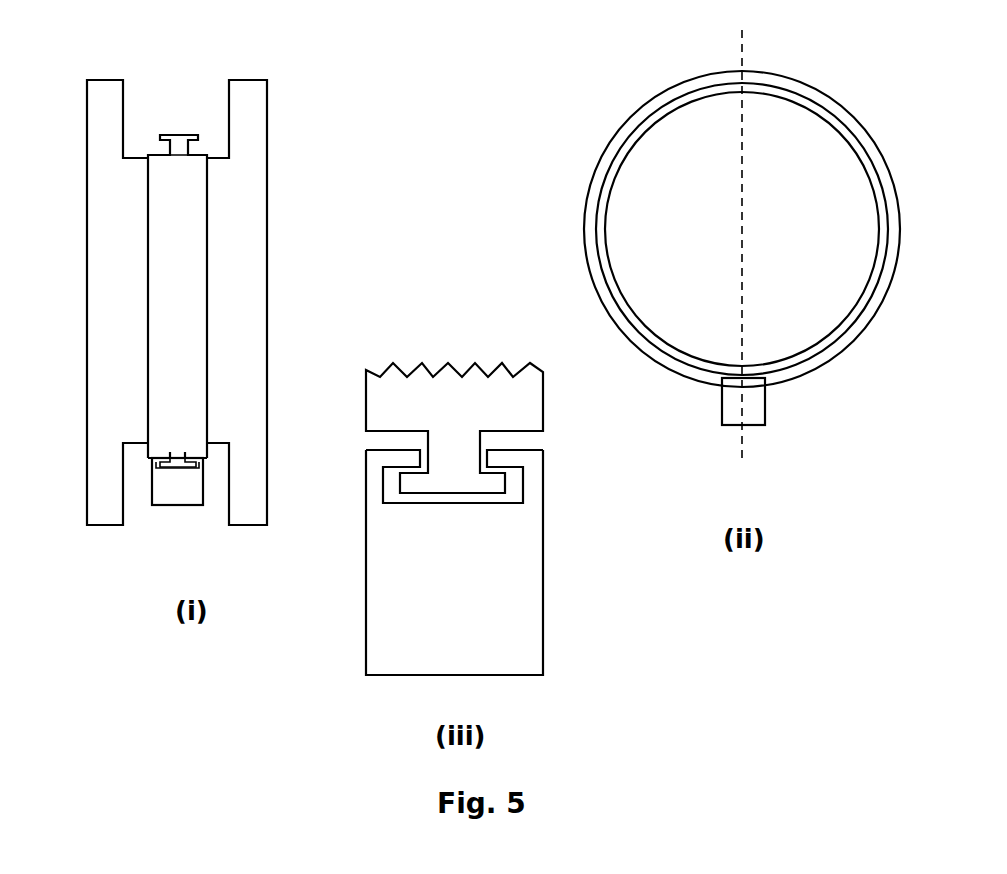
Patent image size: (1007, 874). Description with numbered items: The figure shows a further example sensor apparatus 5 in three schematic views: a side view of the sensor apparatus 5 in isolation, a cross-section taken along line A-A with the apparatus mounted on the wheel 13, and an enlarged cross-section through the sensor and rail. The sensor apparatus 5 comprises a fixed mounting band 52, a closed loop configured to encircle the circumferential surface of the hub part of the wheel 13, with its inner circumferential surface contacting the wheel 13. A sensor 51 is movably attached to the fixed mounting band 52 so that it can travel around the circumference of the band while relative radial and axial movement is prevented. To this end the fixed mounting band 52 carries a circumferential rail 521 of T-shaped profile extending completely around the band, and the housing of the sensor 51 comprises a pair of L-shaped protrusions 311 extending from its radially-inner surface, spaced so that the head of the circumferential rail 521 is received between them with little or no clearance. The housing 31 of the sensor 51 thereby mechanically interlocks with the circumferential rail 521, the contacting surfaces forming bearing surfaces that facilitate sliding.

The sensor apparatus 5 is at (246, 224).
The wheel 13 is at (102, 355).
The bracket 31 is at (177, 490).
The L-shaped protrusion 311 is at (371, 467).
The sensor 51 is at (383, 617).
The fixed mounting band 52 is at (162, 241).
The circumferential rail 521 is at (175, 135).